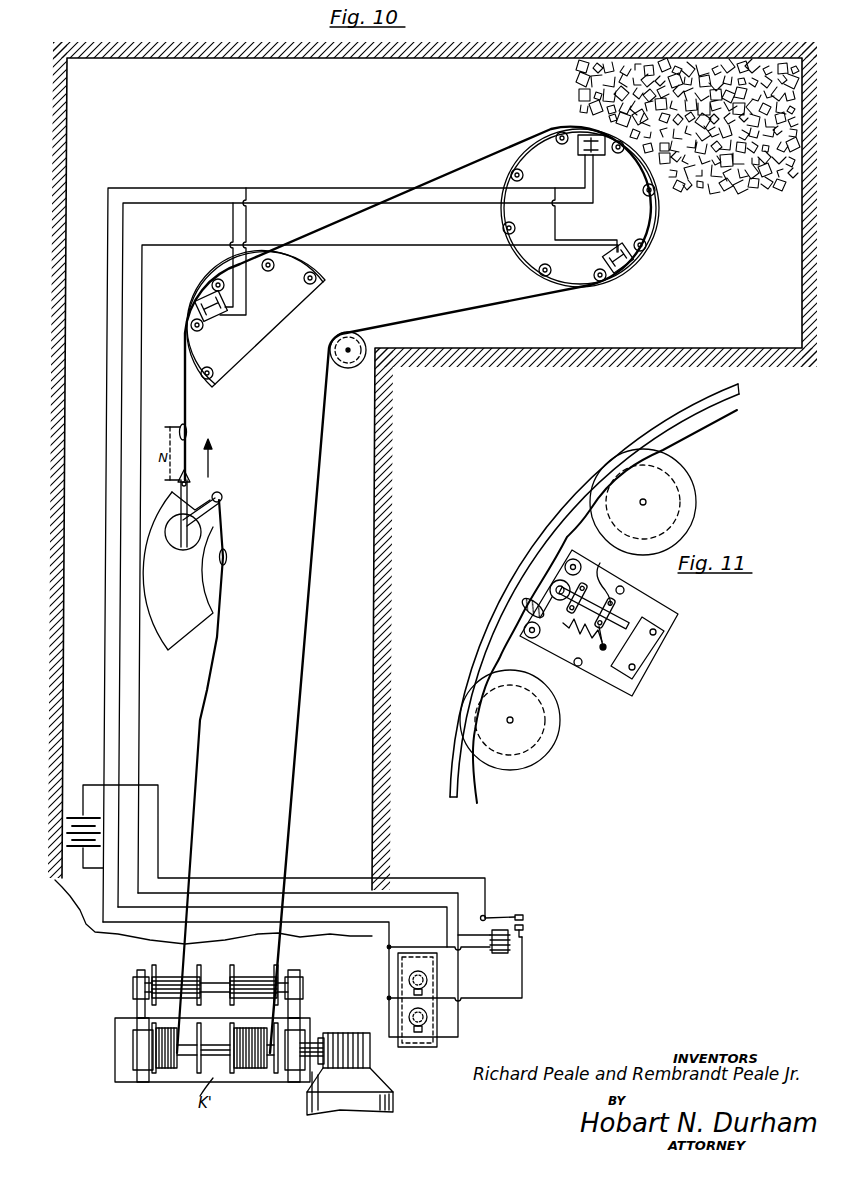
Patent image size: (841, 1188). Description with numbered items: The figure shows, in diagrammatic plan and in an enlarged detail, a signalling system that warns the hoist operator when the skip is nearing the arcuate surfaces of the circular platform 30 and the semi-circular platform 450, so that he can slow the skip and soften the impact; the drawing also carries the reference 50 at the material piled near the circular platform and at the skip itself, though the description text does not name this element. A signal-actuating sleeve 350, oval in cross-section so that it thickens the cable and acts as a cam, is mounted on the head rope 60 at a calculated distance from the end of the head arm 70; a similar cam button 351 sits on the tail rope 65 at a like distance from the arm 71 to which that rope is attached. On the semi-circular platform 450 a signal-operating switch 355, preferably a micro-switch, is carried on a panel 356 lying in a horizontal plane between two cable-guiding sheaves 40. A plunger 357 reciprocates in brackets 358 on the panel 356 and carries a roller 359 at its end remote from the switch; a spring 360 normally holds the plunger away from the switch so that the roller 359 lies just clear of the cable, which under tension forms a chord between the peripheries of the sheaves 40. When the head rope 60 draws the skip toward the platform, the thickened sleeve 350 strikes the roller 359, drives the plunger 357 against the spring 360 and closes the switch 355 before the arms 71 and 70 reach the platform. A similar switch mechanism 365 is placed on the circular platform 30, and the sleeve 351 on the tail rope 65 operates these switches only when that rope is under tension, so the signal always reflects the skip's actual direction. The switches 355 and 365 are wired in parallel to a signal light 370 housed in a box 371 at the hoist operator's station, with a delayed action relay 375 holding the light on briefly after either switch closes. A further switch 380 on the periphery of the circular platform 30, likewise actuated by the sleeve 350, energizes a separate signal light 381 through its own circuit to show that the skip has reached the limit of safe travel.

In FIG. 10, the circular platform 30 is at (526, 262).
In FIG. 11, the cable-guiding sheaves 40 is at (684, 484).
In FIG. 10, the material / scoop 50 is at (575, 100).
In FIG. 10, the head rope 60 is at (184, 388).
In FIG. 11, the head rope 60 is at (572, 525).
In FIG. 10, the tail rope 65 is at (225, 540).
In FIG. 10, the head arm 70 is at (192, 490).
In FIG. 10, the arm 71 is at (219, 514).
In FIG. 10, the signal-actuating sleeve 350 is at (188, 430).
In FIG. 11, the signal-actuating sleeve 350 is at (525, 612).
In FIG. 10, the signal-operating cam button 351 is at (228, 558).
In FIG. 11, the signal-operating switch 355 is at (650, 670).
In FIG. 11, the panel 356 is at (676, 614).
In FIG. 11, the plunger 357 is at (627, 603).
In FIG. 11, the brackets 358 is at (601, 570).
In FIG. 11, the roller 359 is at (550, 587).
In FIG. 11, the spring 360 is at (576, 645).
In FIG. 10, the switch mechanism 365 is at (606, 158).
In FIG. 10, the signal light 370 is at (404, 974).
In FIG. 10, the box 371 is at (428, 1000).
In FIG. 10, the delayed action relay 375 is at (500, 958).
In FIG. 10, the switch 380 is at (640, 262).
In FIG. 10, the separate signal light 381 is at (404, 1015).
In FIG. 10, the semi-circular platform 450 is at (302, 292).
In FIG. 11, the semi-circular platform 450 is at (458, 668).